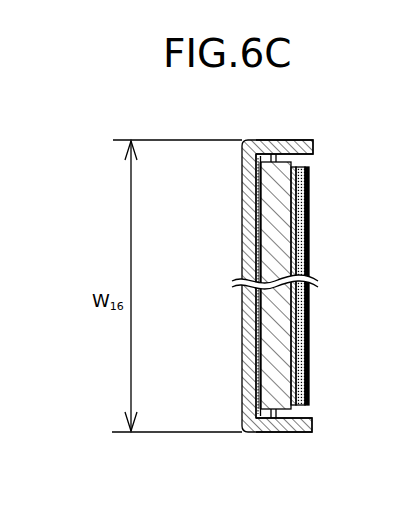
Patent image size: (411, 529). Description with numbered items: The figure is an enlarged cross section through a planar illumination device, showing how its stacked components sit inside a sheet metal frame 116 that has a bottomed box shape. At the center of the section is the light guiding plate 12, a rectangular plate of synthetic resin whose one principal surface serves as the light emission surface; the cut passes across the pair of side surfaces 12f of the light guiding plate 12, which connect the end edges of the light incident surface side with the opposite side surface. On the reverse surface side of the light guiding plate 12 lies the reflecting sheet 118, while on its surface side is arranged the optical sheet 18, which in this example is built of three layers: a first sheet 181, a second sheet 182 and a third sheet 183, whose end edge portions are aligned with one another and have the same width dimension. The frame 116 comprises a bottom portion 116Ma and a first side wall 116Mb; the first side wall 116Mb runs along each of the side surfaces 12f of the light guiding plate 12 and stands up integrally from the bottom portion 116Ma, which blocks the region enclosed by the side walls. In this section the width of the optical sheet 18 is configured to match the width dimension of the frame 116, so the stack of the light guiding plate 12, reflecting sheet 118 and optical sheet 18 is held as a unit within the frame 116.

The frame 116 is at (248, 200).
The first side wall 116Mb is at (297, 138).
The bottom portion 116Ma is at (244, 301).
The side surfaces 12f is at (267, 139).
The light guiding plate 12 is at (272, 378).
The reflecting sheet 118 is at (245, 340).
The optical sheet 18 is at (351, 281).
The first sheet 181 is at (300, 186).
The second sheet 182 is at (303, 218).
The third sheet 183 is at (372, 157).